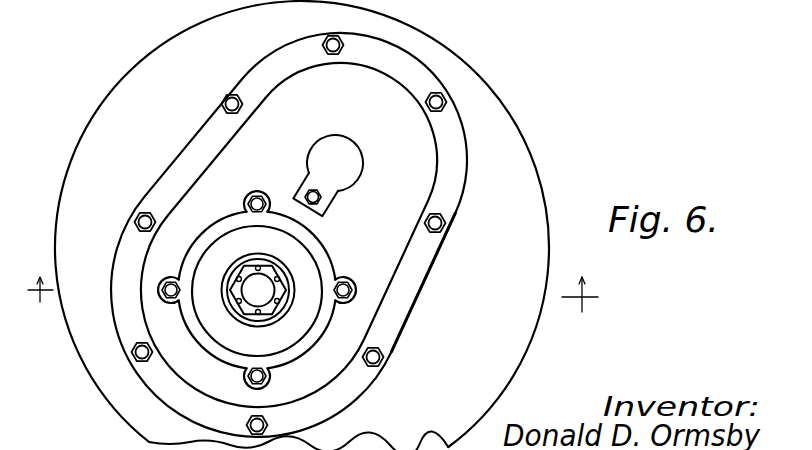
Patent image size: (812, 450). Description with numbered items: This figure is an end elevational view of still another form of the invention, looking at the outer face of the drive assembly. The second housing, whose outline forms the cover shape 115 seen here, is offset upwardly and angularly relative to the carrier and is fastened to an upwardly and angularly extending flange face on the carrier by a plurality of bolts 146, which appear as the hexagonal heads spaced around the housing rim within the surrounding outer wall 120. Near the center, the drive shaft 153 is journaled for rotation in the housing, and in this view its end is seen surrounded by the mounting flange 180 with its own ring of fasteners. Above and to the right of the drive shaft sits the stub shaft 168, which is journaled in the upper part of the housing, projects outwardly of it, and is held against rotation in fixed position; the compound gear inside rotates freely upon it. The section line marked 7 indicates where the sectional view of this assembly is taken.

The housing 120 is at (160, 56).
The cover plate 115 is at (190, 160).
The bolts 146 is at (328, 44).
The stub shaft 168 is at (342, 153).
The bearing flange 180 is at (339, 284).
The drive shaft 153 is at (269, 304).
The section line 7- 7 is at (311, 296).